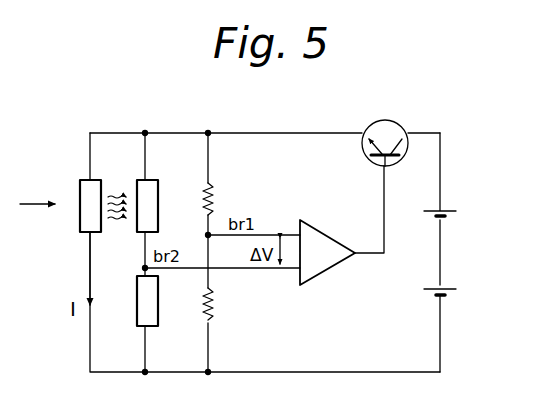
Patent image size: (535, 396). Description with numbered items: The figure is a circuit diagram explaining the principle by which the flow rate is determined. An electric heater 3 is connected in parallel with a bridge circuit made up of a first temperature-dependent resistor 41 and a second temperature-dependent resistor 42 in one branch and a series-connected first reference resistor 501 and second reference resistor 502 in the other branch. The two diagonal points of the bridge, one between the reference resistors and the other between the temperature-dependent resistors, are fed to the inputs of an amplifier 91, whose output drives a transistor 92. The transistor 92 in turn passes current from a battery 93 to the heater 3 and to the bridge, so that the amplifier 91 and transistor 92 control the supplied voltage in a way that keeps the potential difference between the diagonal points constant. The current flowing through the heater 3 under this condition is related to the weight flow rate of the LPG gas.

The electric heater 3 is at (83, 180).
The first temperature-dependent resistor 41 is at (141, 180).
The second temperature-dependent resistor 42 is at (141, 328).
The first reference resistor 501 is at (215, 193).
The second reference resistor 502 is at (215, 310).
The amplifier 91 is at (330, 276).
The transistor 92 is at (390, 123).
The battery 93 is at (444, 244).